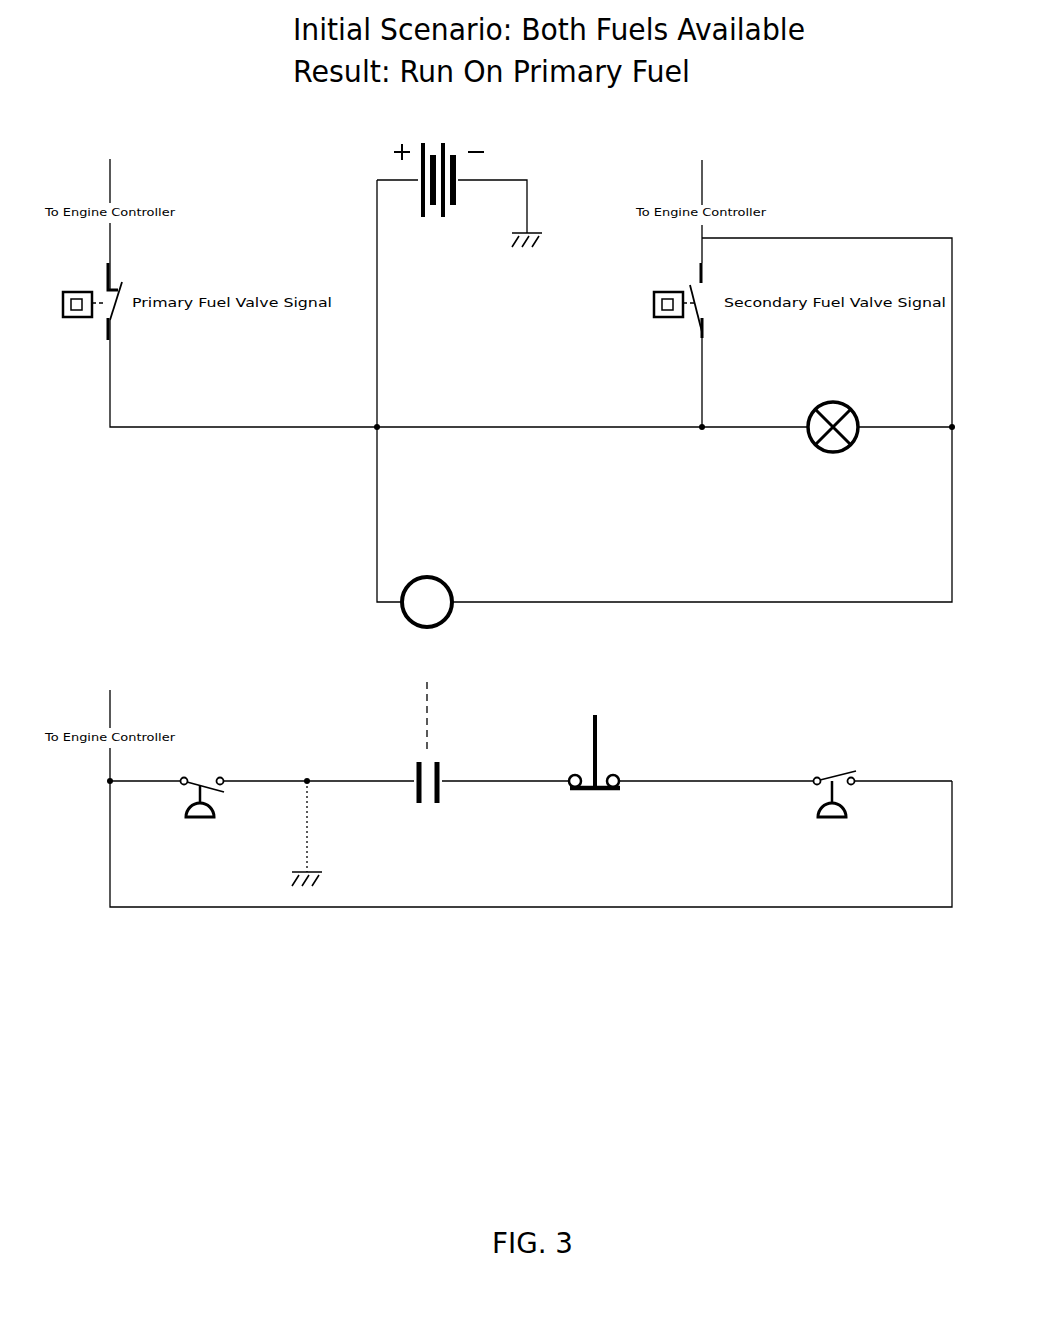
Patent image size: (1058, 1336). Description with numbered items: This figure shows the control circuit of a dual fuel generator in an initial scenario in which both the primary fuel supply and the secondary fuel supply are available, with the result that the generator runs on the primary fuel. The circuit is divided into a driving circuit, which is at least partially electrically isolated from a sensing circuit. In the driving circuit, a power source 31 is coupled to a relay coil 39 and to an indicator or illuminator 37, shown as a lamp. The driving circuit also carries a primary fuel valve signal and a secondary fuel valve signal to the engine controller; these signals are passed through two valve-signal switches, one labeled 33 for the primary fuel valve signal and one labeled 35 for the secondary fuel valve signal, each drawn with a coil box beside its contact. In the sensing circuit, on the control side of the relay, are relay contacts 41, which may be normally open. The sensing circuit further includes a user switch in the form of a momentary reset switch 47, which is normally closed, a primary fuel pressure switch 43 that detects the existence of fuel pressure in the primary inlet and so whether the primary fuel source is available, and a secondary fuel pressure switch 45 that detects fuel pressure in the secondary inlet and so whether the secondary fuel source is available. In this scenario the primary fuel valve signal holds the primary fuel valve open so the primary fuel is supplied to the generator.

The power source 31 is at (497, 157).
The primary fuel valve signal switch 33 is at (150, 272).
The secondary fuel valve signal switch 35 is at (645, 313).
The indicator or illuminator 37 is at (796, 452).
The relay coil 39 is at (458, 570).
The relay contacts 41 is at (453, 740).
The primary fuel pressure switch 43 is at (209, 756).
The secondary fuel pressure switch 45 is at (848, 756).
The momentary reset switch 47 is at (613, 740).